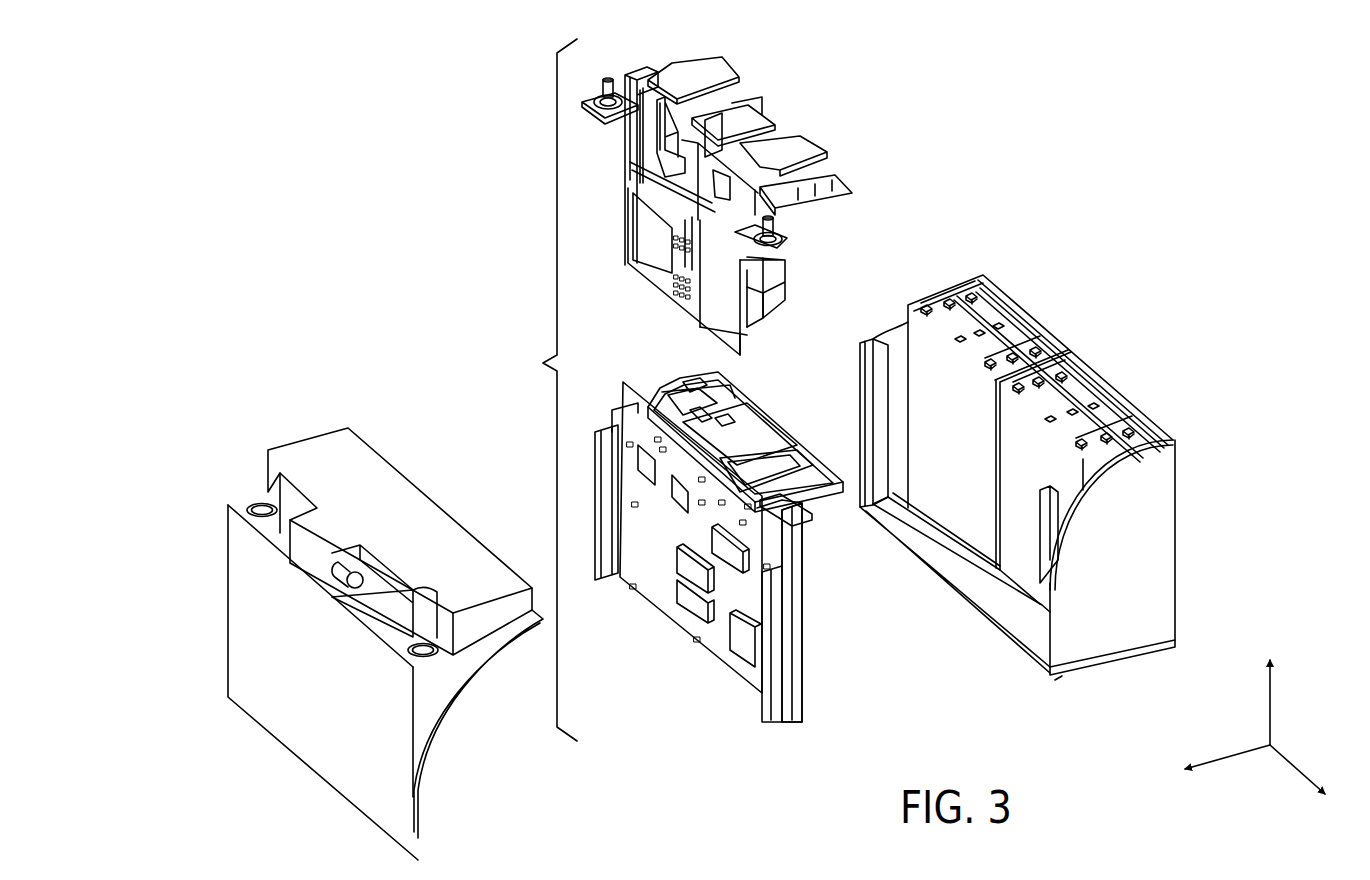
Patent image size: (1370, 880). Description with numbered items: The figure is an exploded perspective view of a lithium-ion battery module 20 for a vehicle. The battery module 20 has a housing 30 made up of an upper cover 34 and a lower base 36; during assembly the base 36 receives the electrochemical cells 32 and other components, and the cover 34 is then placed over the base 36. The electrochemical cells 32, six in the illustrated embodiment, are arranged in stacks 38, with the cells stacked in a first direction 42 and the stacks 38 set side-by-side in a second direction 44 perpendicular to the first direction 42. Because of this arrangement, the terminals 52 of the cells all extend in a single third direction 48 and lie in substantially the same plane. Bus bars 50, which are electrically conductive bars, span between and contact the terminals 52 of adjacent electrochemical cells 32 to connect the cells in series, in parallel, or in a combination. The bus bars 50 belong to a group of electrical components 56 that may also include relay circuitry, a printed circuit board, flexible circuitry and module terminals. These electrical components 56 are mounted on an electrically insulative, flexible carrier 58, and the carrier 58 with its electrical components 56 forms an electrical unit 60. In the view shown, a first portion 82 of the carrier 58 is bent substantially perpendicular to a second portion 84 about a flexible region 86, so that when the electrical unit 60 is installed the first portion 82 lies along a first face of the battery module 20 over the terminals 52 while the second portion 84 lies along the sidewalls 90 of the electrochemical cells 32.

The battery module 20 is at (1038, 152).
The housing 30 is at (408, 815).
The electrochemical cells 32 is at (1132, 442).
The upper cover 34 is at (298, 434).
The lower base 36 is at (1181, 489).
The stacks 38 is at (1033, 258).
The first direction 42 is at (1233, 755).
The second direction 44 is at (1290, 767).
The third direction 48 is at (1273, 710).
The bus bars 50 is at (640, 73).
The terminals 52 is at (969, 295).
The electrical components 56 is at (612, 220).
The carrier 58 is at (808, 653).
The electrical unit 60 is at (698, 387).
The first portion 82 is at (818, 478).
The second portion 84 is at (793, 586).
The flexible region 86 is at (786, 518).
The sidewalls 90 is at (964, 517).